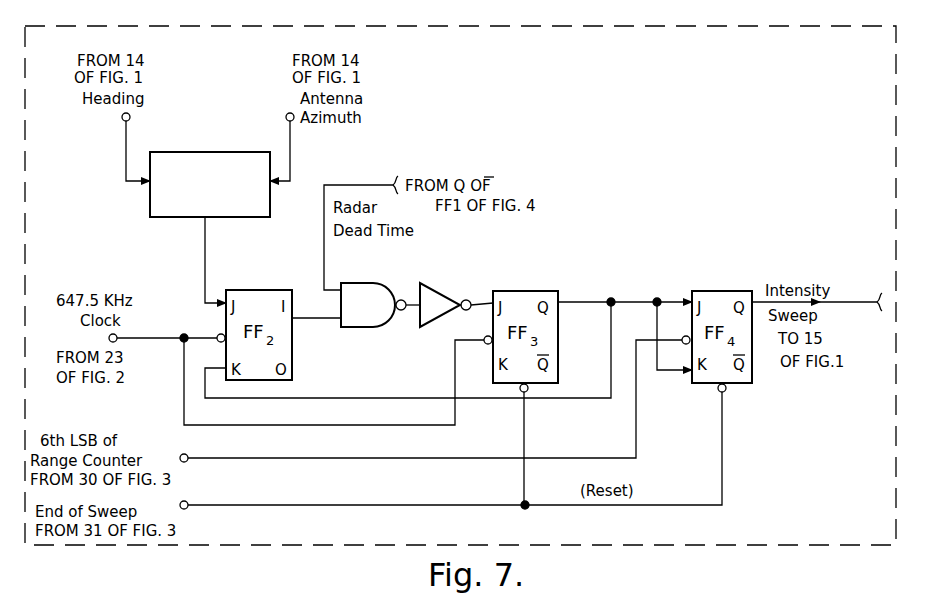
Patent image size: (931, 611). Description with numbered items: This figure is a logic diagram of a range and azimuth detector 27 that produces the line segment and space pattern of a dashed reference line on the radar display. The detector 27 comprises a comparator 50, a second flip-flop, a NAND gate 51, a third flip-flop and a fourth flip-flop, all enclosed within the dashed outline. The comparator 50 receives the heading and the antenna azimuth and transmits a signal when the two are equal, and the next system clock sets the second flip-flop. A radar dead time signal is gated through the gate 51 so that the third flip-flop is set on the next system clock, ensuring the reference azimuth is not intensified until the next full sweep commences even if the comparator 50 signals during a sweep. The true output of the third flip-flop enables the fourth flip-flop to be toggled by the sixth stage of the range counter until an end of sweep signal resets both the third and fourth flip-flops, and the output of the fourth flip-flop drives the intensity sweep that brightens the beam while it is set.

The range and azimuth detector 27 is at (672, 546).
The comparator 50 is at (211, 158).
The NAND gate 51 is at (371, 318).